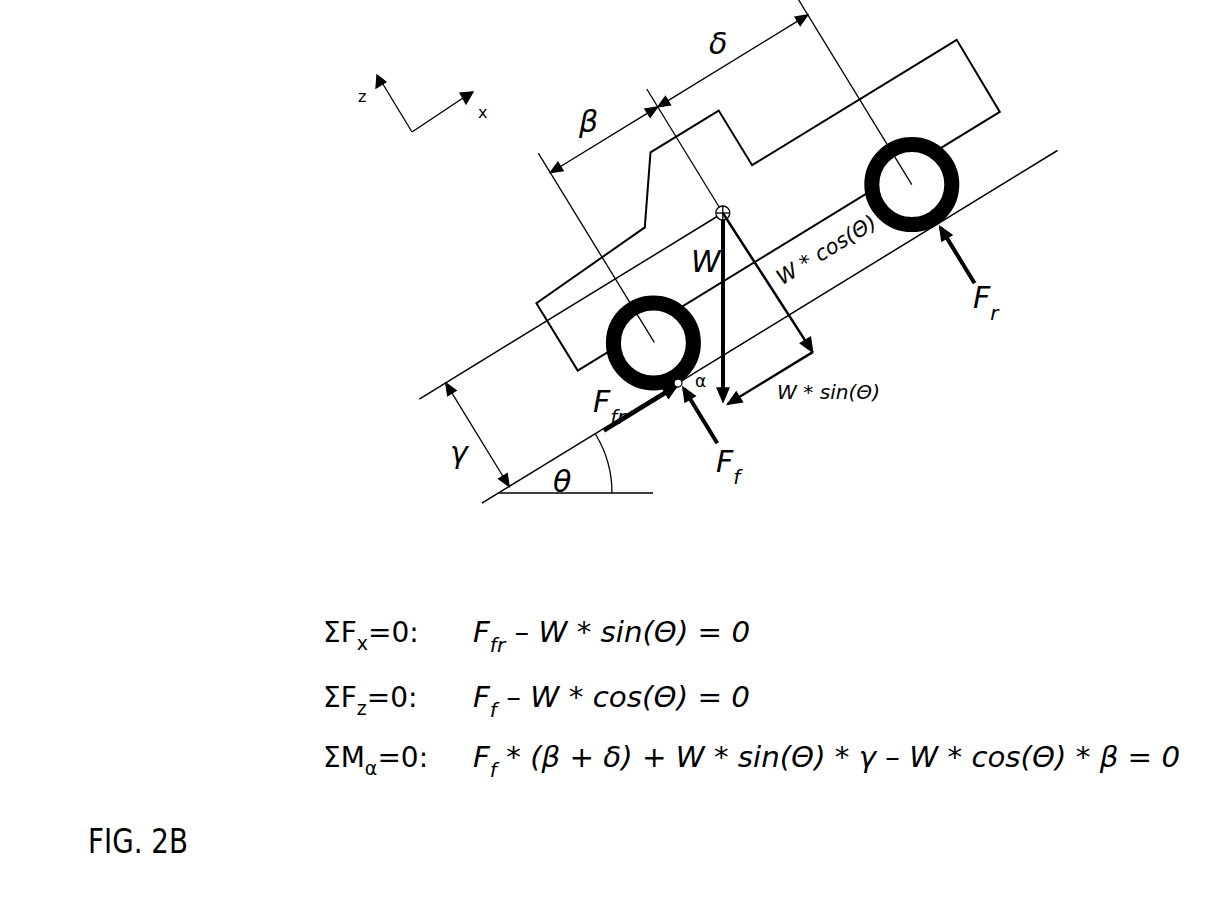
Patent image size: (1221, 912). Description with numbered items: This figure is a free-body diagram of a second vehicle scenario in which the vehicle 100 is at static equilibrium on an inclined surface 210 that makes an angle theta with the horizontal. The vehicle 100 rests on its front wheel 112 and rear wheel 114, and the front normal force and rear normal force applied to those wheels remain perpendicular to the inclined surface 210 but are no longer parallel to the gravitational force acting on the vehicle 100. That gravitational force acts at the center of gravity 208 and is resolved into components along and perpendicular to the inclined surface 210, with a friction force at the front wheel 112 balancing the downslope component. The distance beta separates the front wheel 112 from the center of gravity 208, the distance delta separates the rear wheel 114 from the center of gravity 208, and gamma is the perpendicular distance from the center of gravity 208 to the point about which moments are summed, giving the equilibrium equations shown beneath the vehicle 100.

The vehicle 100 is at (563, 278).
The front wheel 112 is at (612, 366).
The rear wheel 114 is at (958, 173).
The center of gravity 208 is at (731, 216).
The inclined surface 210 is at (838, 287).